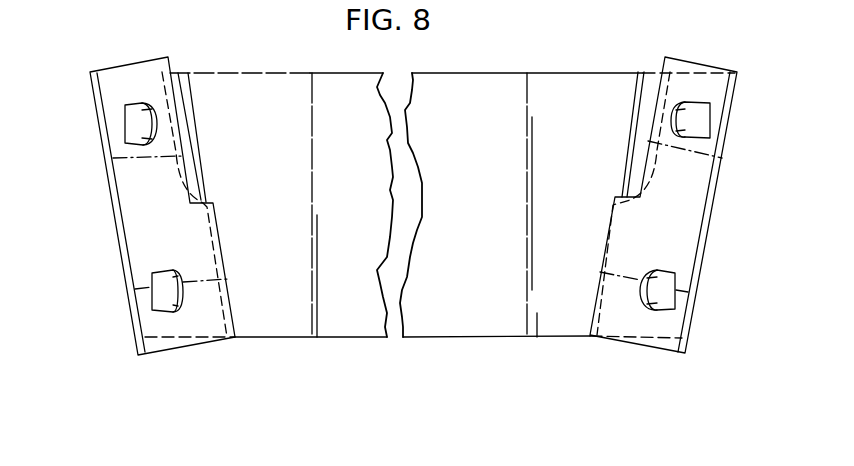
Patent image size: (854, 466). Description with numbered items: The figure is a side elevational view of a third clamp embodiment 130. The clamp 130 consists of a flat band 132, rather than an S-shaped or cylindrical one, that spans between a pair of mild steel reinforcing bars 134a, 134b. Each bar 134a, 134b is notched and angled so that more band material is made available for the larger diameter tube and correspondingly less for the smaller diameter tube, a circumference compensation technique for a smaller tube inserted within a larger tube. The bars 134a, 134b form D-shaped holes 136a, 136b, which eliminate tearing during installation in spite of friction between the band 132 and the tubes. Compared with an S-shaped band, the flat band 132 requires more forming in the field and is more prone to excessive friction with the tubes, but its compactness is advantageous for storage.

The third clamp embodiment 130 is at (410, 224).
The flat band 132 is at (457, 328).
The reinforcing bar 134a is at (133, 198).
The reinforcing bar 134b is at (695, 227).
The D-shaped hole 136a is at (137, 118).
The D-shaped hole 136b is at (697, 126).